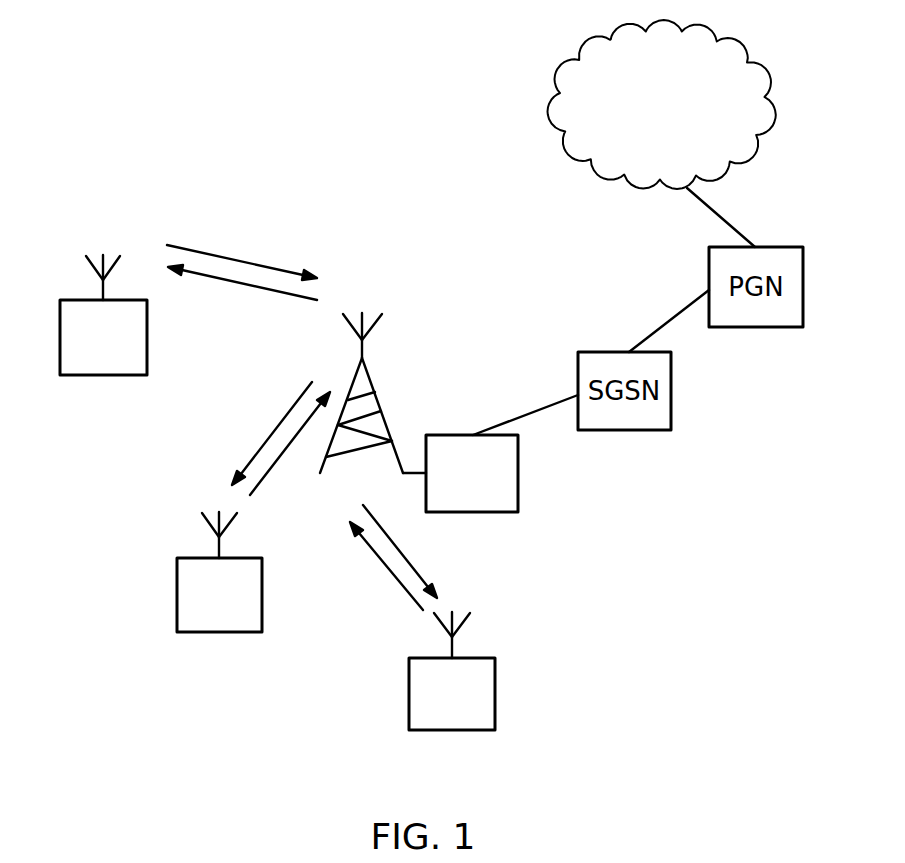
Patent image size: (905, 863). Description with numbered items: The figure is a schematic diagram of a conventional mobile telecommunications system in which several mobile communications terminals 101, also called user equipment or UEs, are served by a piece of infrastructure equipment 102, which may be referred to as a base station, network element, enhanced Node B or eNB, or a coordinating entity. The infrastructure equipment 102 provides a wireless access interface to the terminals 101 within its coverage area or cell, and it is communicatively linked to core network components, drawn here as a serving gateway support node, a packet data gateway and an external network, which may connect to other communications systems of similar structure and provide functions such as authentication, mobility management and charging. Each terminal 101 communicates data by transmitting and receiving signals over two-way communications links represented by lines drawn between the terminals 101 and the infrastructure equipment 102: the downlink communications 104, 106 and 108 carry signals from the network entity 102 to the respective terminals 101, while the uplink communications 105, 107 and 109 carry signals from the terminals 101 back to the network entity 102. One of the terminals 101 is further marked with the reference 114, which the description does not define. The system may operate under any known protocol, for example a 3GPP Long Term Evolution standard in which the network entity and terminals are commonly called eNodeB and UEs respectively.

The mobile communications terminal 101 is at (98, 375).
The infrastructure equipment 102 is at (518, 502).
The downlink communications link 104 is at (245, 286).
The uplink communications link 105 is at (241, 262).
The downlink communications link 106 is at (377, 558).
The uplink communications link 107 is at (408, 558).
The downlink communications link 108 is at (271, 431).
The uplink communications link 109 is at (266, 474).
The UE antenna 114 is at (478, 658).